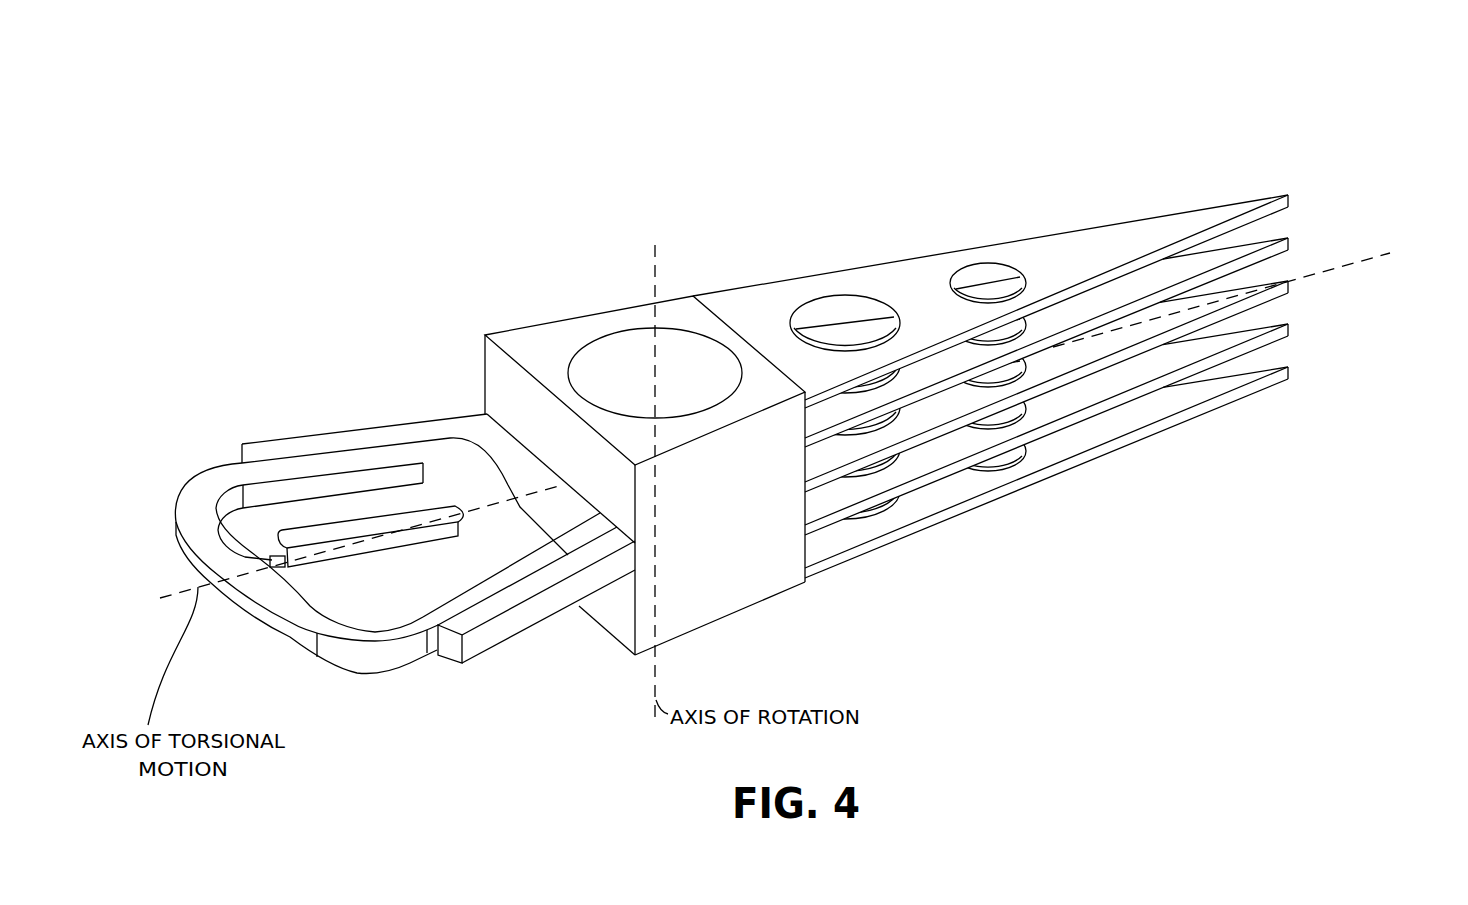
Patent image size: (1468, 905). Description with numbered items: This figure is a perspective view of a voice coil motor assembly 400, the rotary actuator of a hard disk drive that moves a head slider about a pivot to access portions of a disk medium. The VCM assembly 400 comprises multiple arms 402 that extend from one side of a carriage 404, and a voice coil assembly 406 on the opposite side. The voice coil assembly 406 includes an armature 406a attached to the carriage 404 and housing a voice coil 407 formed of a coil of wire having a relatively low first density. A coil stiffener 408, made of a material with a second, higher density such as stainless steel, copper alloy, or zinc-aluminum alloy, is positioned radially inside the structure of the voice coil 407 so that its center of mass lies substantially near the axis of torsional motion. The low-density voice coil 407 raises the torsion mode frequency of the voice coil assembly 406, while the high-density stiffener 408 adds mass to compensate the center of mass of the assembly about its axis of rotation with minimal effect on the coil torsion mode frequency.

The voice coil motor (VCM) assembly 400 is at (597, 118).
The arms 402 is at (1388, 172).
The carriage 404 is at (677, 310).
The voice coil assembly (VCA) 406 is at (340, 388).
The armature 406a is at (388, 433).
The voice coil 407 is at (383, 660).
The coil stiffener 408 is at (313, 583).